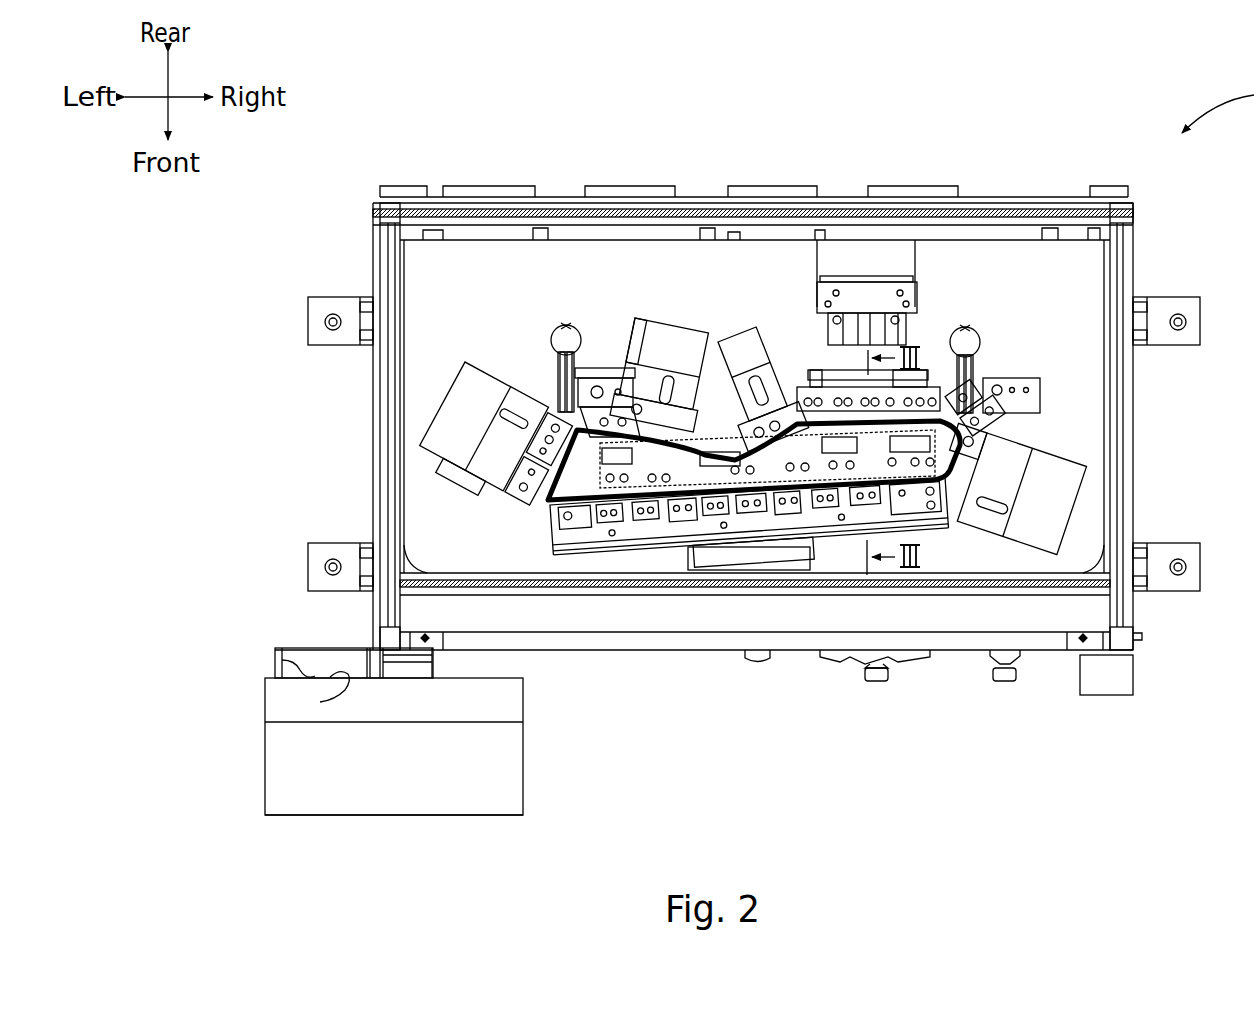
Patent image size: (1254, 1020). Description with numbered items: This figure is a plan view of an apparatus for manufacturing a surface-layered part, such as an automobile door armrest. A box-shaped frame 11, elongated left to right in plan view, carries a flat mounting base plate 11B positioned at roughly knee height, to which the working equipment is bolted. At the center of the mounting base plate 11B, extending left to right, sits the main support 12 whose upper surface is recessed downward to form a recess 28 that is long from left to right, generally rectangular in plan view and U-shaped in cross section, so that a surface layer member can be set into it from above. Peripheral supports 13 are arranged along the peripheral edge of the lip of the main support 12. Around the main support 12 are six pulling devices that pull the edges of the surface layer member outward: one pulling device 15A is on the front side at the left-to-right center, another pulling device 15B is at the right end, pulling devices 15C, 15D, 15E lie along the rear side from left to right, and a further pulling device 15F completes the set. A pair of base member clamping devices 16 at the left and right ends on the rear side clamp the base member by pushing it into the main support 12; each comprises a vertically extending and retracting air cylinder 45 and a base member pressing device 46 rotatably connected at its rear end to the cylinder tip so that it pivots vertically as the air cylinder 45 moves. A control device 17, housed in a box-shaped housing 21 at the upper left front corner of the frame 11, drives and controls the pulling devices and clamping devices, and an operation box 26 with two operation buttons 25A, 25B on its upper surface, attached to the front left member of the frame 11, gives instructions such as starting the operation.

The frame 11 is at (388, 455).
The mounting base plate 11B is at (1068, 378).
The main support 12 is at (975, 440).
The peripheral supports 13 is at (712, 440).
The pulling device 15A is at (706, 563).
The pulling device 15B is at (1058, 502).
The pulling device 15C is at (880, 290).
The pulling device 15D is at (735, 347).
The pulling device 15E is at (648, 330).
The pulling device 15F is at (445, 418).
The base member clamping devices 16 is at (548, 335).
The control device 17 is at (433, 797).
The housing 21 is at (298, 778).
The operation button 25A is at (282, 660).
The operation button 25B is at (320, 702).
The operation box 26 is at (320, 647).
The recess 28 is at (795, 482).
The air cylinder 45 is at (577, 327).
The base member pressing device 46 is at (612, 372).